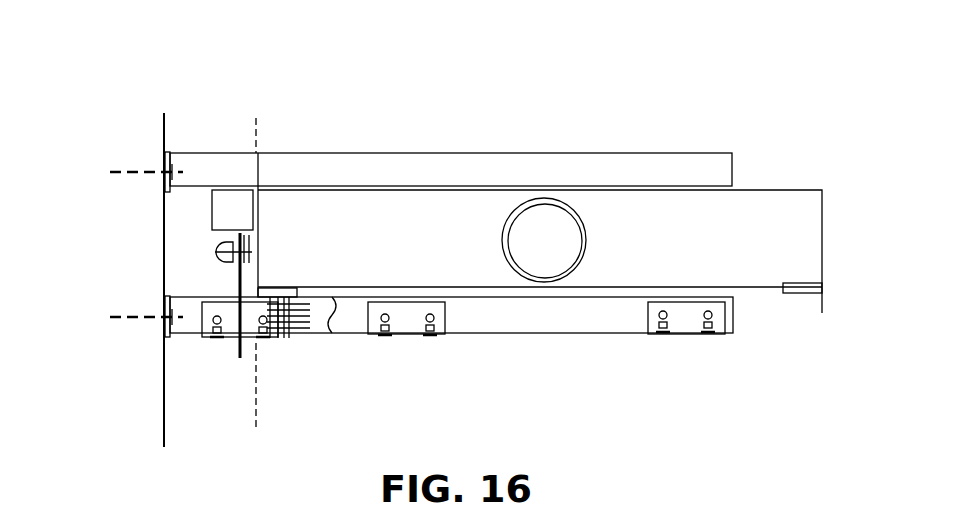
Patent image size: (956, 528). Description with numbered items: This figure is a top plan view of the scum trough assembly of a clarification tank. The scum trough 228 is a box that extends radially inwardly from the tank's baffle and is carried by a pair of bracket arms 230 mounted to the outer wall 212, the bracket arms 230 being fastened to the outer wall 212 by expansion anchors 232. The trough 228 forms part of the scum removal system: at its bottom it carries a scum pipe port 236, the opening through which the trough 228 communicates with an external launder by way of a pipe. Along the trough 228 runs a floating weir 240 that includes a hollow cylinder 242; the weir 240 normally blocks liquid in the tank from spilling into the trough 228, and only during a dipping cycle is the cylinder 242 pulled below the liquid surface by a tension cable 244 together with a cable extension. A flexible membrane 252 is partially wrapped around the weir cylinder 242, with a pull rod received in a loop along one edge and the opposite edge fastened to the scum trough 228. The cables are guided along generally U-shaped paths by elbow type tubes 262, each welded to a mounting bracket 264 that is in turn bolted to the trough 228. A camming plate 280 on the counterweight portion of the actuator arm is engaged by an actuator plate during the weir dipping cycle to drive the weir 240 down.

The outer wall 212 is at (163, 125).
The scum trough 228 is at (788, 190).
The bracket arm 230 is at (537, 152).
The expansion anchor 232 is at (150, 177).
The scum pipe port 236 is at (567, 213).
The floating weir 240 is at (308, 338).
The hollow cylinder 242 is at (283, 318).
The tension cable 244 is at (553, 338).
The flexible membrane 252 is at (328, 327).
The elbow type tube 262 is at (680, 337).
The mounting bracket 264 is at (720, 318).
The camming plate 280 is at (235, 202).